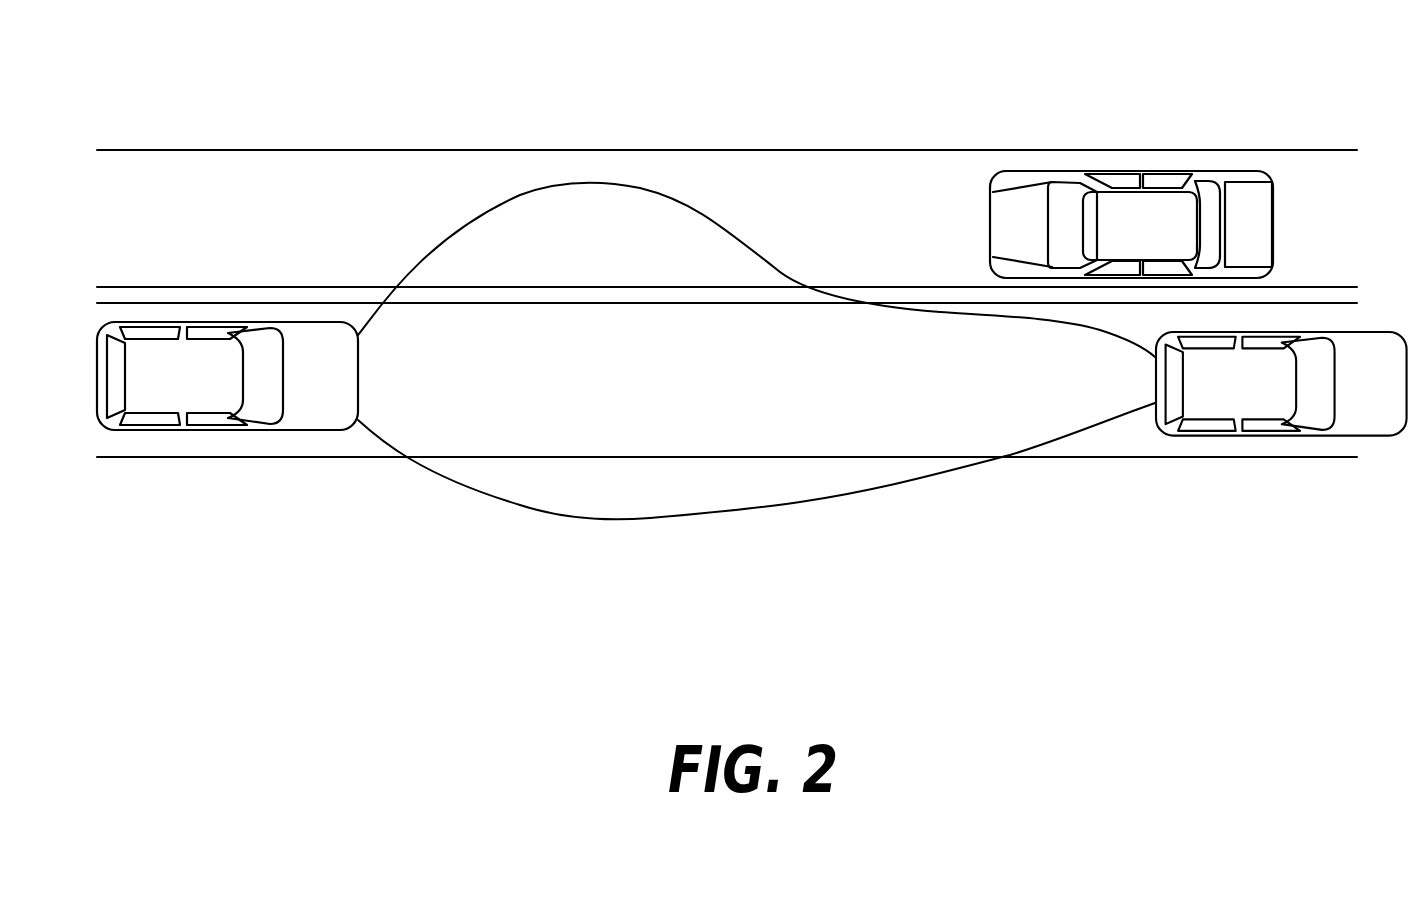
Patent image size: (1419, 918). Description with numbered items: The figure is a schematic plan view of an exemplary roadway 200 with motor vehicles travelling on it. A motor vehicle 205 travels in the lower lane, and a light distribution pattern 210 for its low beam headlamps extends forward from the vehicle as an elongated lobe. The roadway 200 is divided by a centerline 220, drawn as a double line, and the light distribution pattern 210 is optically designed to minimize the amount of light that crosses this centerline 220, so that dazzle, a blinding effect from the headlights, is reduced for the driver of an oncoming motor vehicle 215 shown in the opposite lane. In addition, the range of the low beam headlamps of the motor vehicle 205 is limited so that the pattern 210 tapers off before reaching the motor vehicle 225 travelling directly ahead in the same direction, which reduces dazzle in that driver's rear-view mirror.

The roadway 200 is at (146, 183).
The motor vehicle 205 is at (261, 430).
The light distribution pattern 210 is at (798, 502).
The oncoming motor vehicle 215 is at (1028, 170).
The centerline 220 is at (245, 295).
The motor vehicle directly ahead 225 is at (1272, 437).